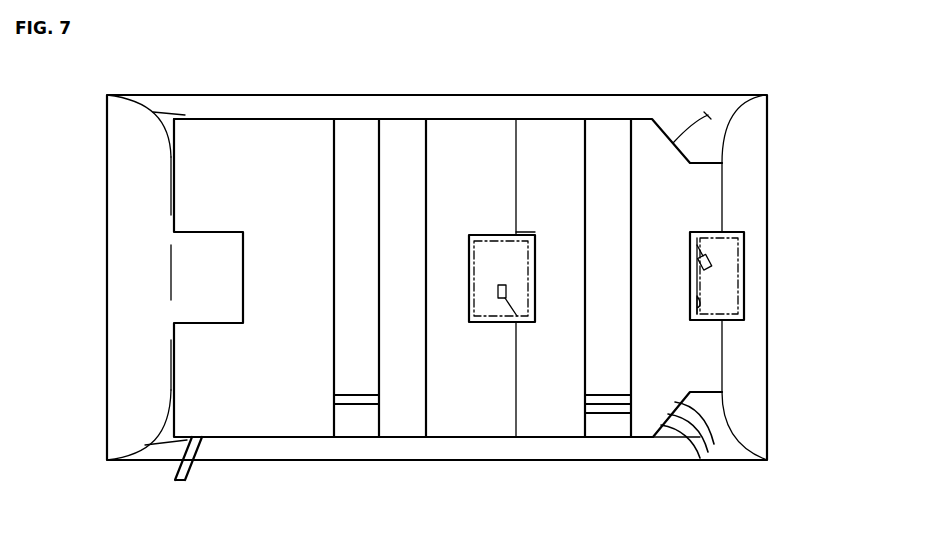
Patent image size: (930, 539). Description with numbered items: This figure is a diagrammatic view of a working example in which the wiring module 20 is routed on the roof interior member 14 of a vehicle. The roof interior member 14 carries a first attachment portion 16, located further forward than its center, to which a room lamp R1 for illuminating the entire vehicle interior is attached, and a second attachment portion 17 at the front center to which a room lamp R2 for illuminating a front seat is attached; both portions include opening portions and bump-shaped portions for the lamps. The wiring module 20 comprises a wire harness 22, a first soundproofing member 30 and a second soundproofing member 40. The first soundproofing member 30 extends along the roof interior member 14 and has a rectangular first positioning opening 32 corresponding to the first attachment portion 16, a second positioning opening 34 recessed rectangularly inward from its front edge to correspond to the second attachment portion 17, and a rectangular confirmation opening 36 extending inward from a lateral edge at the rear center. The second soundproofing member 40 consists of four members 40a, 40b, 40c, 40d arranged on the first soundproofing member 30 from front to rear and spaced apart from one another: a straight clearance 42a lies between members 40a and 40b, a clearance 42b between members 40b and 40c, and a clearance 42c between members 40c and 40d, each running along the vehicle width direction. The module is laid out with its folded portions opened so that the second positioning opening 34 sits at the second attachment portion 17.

The roof interior member 14 is at (683, 461).
The wiring module 20 is at (465, 115).
The second soundproofing member 40 is at (548, 115).
The second soundproofing member 40a is at (637, 430).
The second soundproofing member 40b is at (540, 425).
The second soundproofing member 40c is at (398, 425).
The second soundproofing member 40d is at (272, 425).
The clearance 42a is at (631, 137).
The clearance 42b is at (516, 147).
The clearance 42c is at (379, 136).
The first attachment portion 16 is at (484, 238).
The second attachment portion 17 is at (736, 262).
The room lamp R1 is at (497, 238).
The room lamp R2 is at (745, 290).
The first soundproofing member 30 is at (354, 425).
The first positioning opening 32 is at (478, 305).
The second positioning opening 34 is at (692, 318).
The confirmation opening 36 is at (236, 293).
The wire harness 22 is at (198, 448).